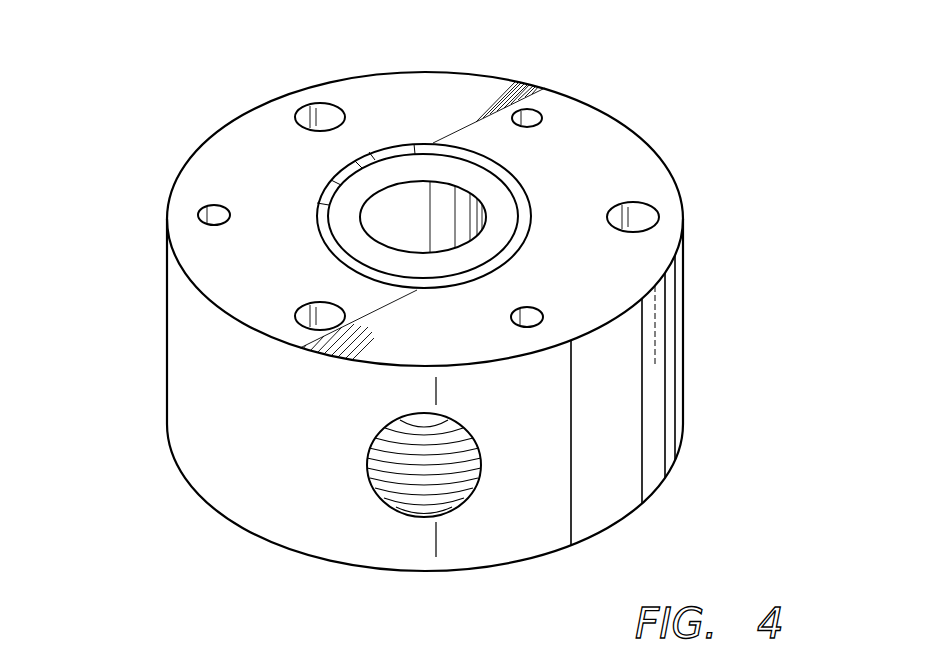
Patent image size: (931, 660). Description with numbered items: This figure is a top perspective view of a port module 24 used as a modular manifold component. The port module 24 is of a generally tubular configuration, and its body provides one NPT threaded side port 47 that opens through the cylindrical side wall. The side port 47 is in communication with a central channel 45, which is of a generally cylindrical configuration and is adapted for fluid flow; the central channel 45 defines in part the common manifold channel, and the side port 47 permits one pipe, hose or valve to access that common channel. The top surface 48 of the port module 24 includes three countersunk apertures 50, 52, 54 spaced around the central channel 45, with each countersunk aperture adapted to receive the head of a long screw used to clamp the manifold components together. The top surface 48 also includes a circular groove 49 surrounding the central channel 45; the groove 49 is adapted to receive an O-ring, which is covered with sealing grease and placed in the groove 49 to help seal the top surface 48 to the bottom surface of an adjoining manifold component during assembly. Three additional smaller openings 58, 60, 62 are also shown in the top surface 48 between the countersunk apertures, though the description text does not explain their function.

The port module 24 is at (698, 47).
The central channel 45 is at (397, 217).
The NPT threaded side port 47 is at (400, 477).
The top surface 48 is at (610, 147).
The circular groove 49 is at (513, 247).
The countersunk aperture 50 is at (640, 220).
The countersunk aperture 52 is at (320, 112).
The countersunk aperture 54 is at (322, 322).
The pin hole 58 is at (527, 310).
The pin hole 60 is at (527, 115).
The pin hole 62 is at (212, 208).